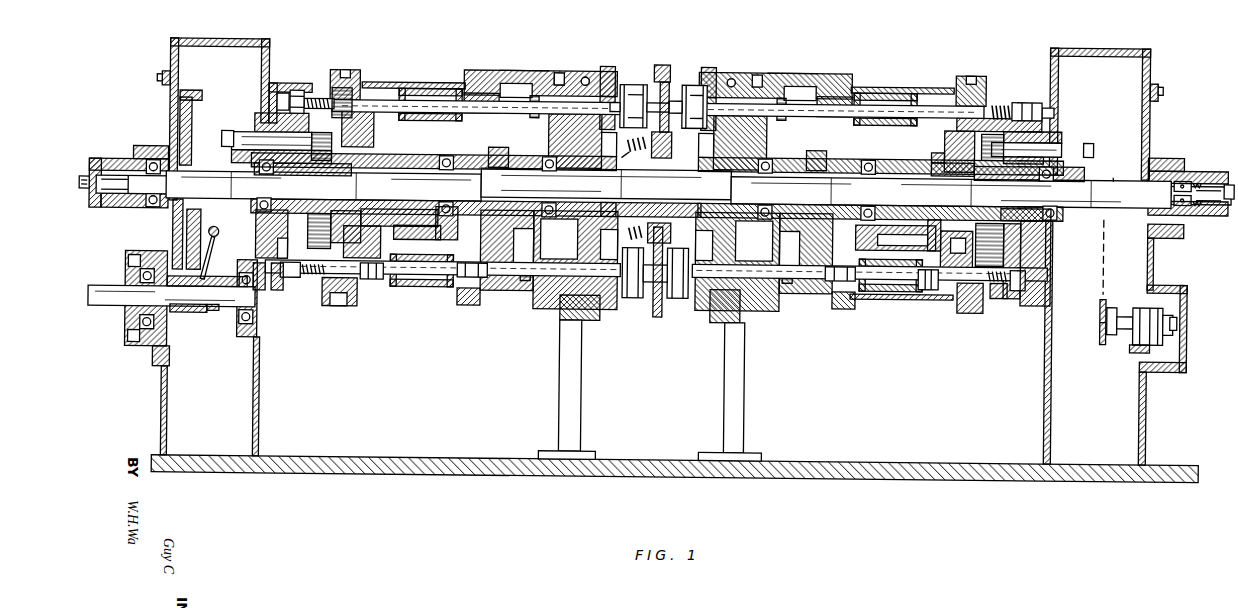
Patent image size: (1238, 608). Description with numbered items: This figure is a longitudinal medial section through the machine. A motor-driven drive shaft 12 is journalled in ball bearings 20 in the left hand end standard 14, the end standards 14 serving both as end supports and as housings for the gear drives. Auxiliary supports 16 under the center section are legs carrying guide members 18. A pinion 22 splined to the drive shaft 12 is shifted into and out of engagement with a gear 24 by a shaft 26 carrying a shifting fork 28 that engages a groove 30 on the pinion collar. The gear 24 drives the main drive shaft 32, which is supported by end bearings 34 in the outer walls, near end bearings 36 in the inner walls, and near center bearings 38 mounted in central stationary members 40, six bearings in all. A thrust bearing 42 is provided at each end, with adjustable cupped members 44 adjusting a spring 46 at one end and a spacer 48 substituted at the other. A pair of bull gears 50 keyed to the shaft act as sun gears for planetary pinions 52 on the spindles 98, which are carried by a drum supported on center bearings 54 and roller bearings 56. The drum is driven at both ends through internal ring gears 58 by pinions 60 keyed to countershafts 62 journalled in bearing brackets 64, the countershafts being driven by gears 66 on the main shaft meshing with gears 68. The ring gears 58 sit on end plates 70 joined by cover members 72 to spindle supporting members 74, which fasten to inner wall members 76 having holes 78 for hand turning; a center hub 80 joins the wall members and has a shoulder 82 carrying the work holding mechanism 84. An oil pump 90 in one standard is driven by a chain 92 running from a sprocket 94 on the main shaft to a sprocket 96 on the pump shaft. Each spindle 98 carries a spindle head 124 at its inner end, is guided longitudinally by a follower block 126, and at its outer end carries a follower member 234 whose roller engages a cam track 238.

The drive shaft 12 is at (110, 300).
The end standards 14 is at (190, 43).
The auxiliary supports 16 is at (560, 395).
The guide members 18 is at (585, 322).
The ball bearings 20 is at (150, 334).
The pinion 22 is at (186, 318).
The gear 24 is at (180, 128).
The shaft 26 is at (218, 236).
The shifting fork 28 is at (210, 256).
The groove 30 is at (208, 316).
The main drive shaft 32 is at (160, 162).
The end bearings 34 is at (138, 160).
The near end bearings 36 is at (1050, 228).
The near center bearings 38 is at (456, 226).
The central stationary members 40 is at (380, 222).
The thrust bearing 42 is at (100, 178).
The adjustable cupped members 44 is at (88, 196).
The spring 46 is at (1197, 212).
The spacer 48 is at (118, 214).
The bull gears 50 is at (495, 282).
The planetary pinions 52 is at (532, 96).
The center bearings 54 is at (548, 72).
The roller bearings 56 is at (358, 120).
The internal ring gears 58 is at (300, 94).
The pinions 60 is at (312, 102).
The countershafts 62 is at (258, 133).
The bearing brackets 64 is at (283, 97).
The gears 66 is at (228, 160).
The gears 68 is at (230, 133).
The end plates 70 is at (340, 72).
The cover members 72 is at (402, 84).
The spindle supporting members 74 is at (500, 72).
The inner wall members 76 is at (583, 77).
The holes 78 is at (557, 73).
The center hub 80 is at (693, 300).
The shoulder 82 is at (668, 207).
The face plate and clamping or work holding mechanism 84 is at (448, 184).
The oil pump 90 is at (1165, 367).
The chain 92 is at (1106, 288).
The sprocket 94 is at (1113, 177).
The sprocket 96 is at (1100, 338).
The spindles 98 is at (468, 95).
The spindle head 124 is at (690, 85).
The follower block 126 is at (425, 90).
The follower member 234 is at (305, 282).
The cam track 238 is at (278, 296).